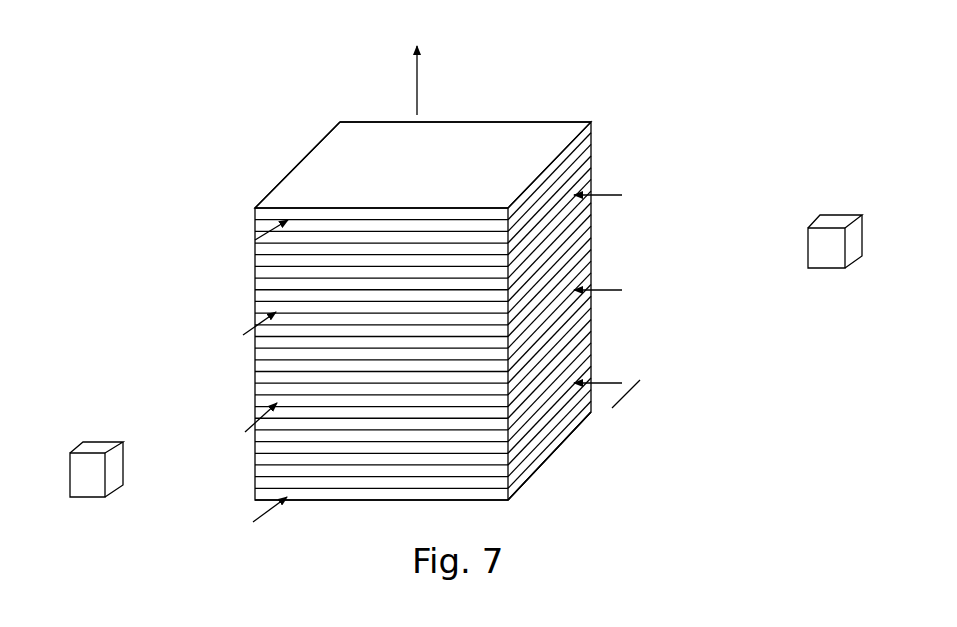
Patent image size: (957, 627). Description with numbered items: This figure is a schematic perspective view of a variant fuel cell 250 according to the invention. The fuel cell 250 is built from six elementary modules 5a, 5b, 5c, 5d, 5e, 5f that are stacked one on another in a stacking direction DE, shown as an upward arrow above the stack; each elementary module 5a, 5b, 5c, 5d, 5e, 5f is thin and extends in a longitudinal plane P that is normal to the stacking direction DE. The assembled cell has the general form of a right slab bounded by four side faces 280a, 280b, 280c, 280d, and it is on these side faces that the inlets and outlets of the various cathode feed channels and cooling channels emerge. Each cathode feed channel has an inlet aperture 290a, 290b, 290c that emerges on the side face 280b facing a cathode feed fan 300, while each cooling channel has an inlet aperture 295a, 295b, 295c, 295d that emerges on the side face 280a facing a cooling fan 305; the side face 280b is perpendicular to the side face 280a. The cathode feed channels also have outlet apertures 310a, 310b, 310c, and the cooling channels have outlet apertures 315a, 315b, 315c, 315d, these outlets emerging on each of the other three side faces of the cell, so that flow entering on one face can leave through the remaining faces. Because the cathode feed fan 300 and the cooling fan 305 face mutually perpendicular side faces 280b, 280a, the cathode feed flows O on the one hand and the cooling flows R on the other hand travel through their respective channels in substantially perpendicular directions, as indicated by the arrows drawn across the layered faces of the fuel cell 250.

The fuel cell 250 is at (295, 78).
The side face 280a is at (372, 501).
The side face 280b is at (572, 438).
The side face 280c is at (492, 122).
The side face 280d is at (292, 172).
The inlet aperture 290a is at (591, 175).
The inlet aperture 290b is at (591, 265).
The inlet aperture 290c is at (591, 405).
The inlet aperture 295a is at (255, 215).
The inlet aperture 295b is at (255, 312).
The inlet aperture 295c is at (255, 405).
The inlet aperture 295d is at (255, 496).
The cathode feed fan 300 is at (826, 260).
The cooling fan 305 is at (92, 483).
The outlet aperture 310a is at (255, 262).
The outlet aperture 310b is at (255, 352).
The outlet aperture 310c is at (255, 447).
The outlet aperture 315a is at (591, 125).
The outlet aperture 315b is at (591, 225).
The outlet aperture 315c is at (591, 318).
The outlet aperture 315d is at (585, 423).
The elementary module 5a is at (591, 150).
The elementary module 5b is at (591, 205).
The elementary module 5c is at (591, 245).
The elementary module 5d is at (591, 298).
The elementary module 5e is at (591, 338).
The elementary module 5f is at (255, 482).
The stacking direction DE is at (411, 77).
The cathode feed flow O is at (591, 290).
The longitudinal plane P is at (557, 457).
The cooling flow R is at (270, 512).